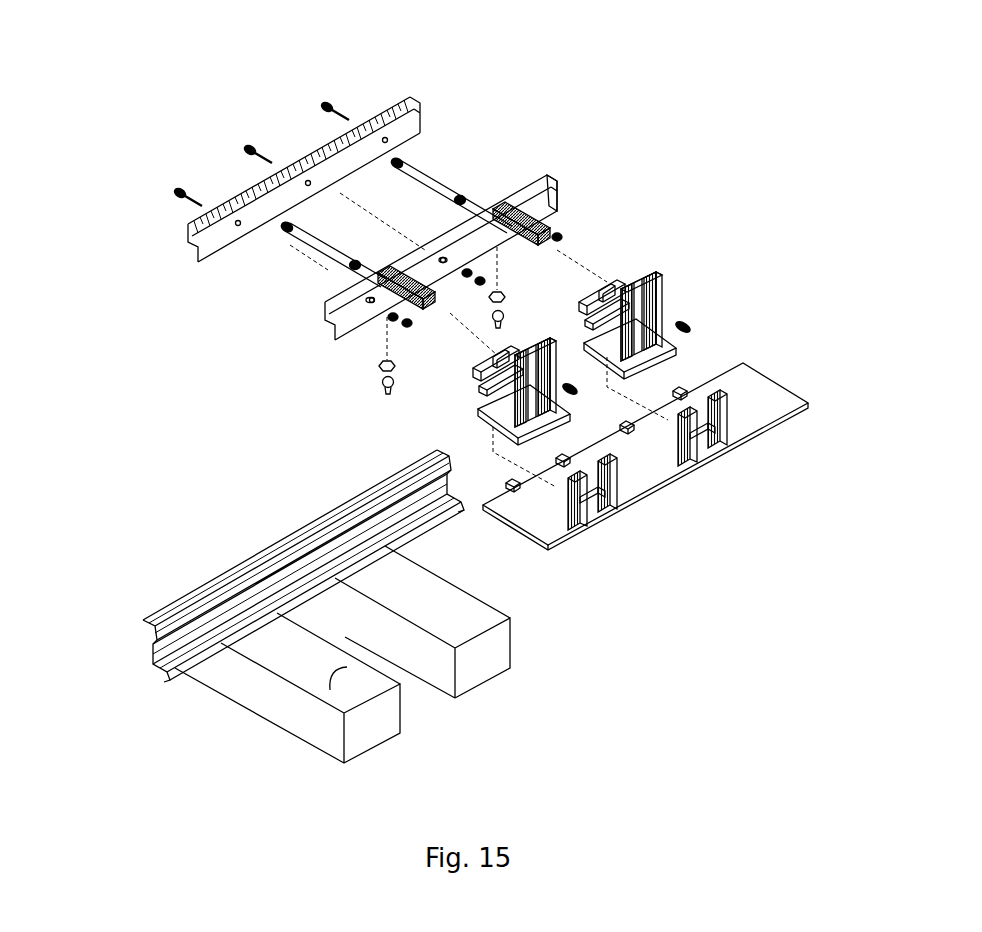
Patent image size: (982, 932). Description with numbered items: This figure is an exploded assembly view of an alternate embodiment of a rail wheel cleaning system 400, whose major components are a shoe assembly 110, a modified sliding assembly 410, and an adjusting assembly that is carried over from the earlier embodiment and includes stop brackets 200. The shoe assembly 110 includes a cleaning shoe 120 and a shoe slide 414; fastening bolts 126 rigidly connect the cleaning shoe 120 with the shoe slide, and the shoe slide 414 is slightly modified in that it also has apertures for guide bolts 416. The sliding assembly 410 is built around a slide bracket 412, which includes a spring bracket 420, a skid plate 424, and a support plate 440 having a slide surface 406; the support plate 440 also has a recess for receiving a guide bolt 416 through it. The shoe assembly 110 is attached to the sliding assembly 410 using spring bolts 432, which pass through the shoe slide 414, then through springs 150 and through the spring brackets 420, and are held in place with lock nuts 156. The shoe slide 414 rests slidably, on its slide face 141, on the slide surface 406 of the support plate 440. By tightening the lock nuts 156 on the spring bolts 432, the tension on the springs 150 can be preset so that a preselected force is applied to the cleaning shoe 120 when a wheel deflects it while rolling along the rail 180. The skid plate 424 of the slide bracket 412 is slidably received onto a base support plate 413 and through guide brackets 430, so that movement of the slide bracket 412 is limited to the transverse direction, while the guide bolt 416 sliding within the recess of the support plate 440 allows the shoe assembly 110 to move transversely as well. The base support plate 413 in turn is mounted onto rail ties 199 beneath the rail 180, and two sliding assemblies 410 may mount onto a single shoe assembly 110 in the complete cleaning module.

The shoe assembly 110 is at (152, 313).
The cleaning shoe 120 is at (412, 130).
The fastening bolts 126 is at (177, 197).
The slide face 141 is at (328, 325).
The springs 150 is at (392, 288).
The lock nuts 156 is at (690, 331).
The rail 180 is at (183, 613).
The rail ties 199 is at (310, 723).
The stop brackets 200 is at (597, 510).
The rail wheel cleaning system 400 is at (526, 704).
The slide surface 406 is at (608, 287).
The sliding assembly 410 is at (150, 423).
The slide bracket 412 is at (752, 209).
The base support plate 413 is at (560, 522).
The shoe slide 414 is at (547, 197).
The guide bolts 416 is at (383, 393).
The spring bracket 420 is at (660, 309).
The skid plate 424 is at (663, 373).
The guide brackets 430 is at (627, 437).
The spring bolts 432 is at (430, 180).
The support plate 440 is at (487, 370).